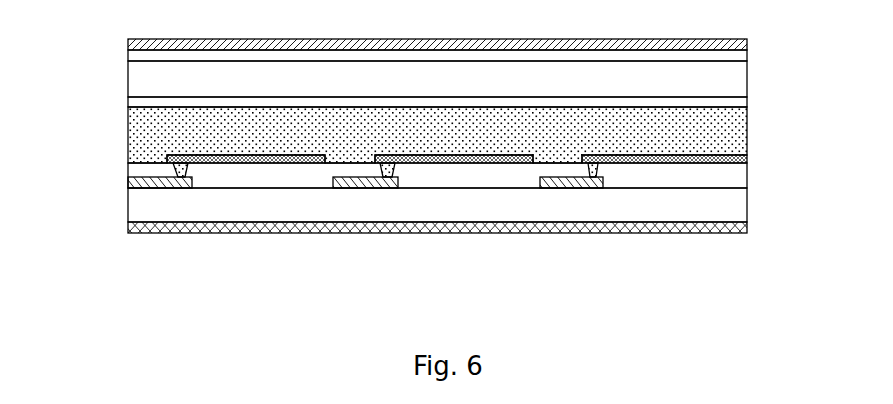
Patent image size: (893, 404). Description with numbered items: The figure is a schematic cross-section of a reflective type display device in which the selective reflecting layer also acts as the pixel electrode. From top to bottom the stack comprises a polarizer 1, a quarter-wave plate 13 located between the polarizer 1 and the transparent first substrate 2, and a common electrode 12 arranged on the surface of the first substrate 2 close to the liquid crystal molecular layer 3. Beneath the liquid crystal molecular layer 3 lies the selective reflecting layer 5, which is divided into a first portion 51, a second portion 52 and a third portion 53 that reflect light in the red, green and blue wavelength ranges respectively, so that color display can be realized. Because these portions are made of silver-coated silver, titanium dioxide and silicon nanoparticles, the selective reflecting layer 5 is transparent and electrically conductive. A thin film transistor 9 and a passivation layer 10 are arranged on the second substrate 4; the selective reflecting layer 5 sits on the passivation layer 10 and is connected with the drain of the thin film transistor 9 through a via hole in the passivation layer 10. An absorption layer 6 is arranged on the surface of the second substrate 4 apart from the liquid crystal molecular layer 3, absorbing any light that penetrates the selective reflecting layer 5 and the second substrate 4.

The polarizer 1 is at (723, 39).
The quarter-wave plate 13 is at (712, 56).
The first substrate 2 is at (712, 81).
The common electrode 12 is at (712, 101).
The liquid crystal molecular layer 3 is at (712, 135).
The selective reflecting layer 5 is at (457, 236).
The first portion 51 is at (300, 158).
The second portion 52 is at (446, 158).
The third portion 53 is at (634, 215).
The passivation layer 10 is at (712, 172).
The thin film transistor 9 is at (140, 182).
The second substrate 4 is at (712, 202).
The absorption layer 6 is at (712, 227).